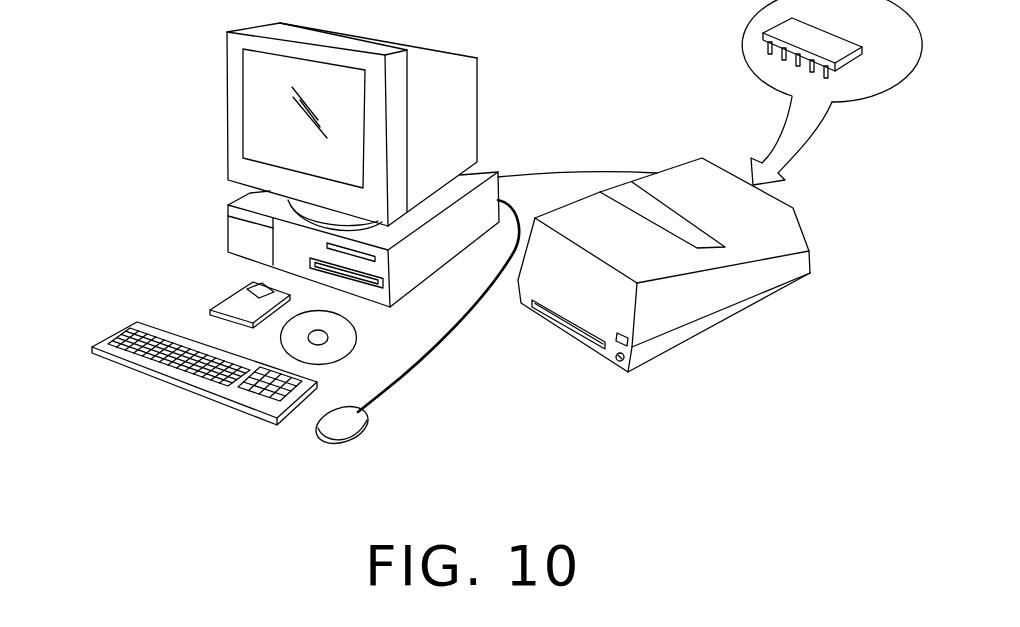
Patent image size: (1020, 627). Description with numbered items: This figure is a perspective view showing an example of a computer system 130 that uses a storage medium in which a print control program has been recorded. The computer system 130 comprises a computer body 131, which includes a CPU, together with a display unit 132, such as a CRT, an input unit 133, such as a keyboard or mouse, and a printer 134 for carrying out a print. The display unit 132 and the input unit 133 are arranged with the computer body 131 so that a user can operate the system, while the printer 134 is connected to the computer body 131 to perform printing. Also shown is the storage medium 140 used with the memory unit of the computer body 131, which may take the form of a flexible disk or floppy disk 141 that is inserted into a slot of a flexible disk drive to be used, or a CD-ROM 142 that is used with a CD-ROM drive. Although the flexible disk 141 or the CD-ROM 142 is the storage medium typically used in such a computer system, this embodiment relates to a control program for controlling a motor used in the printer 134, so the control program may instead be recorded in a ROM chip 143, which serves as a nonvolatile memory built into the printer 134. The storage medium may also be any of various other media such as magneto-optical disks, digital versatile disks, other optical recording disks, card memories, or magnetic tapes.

The computer system 130 is at (488, 47).
The computer body 131 is at (243, 235).
The display unit 132 is at (235, 115).
The input unit 133 is at (325, 423).
The printer 134 is at (667, 173).
The storage medium 140 is at (173, 305).
The flexible disk 141 is at (235, 303).
The CD-ROM 142 is at (338, 332).
The ROM chip 143 is at (812, 25).